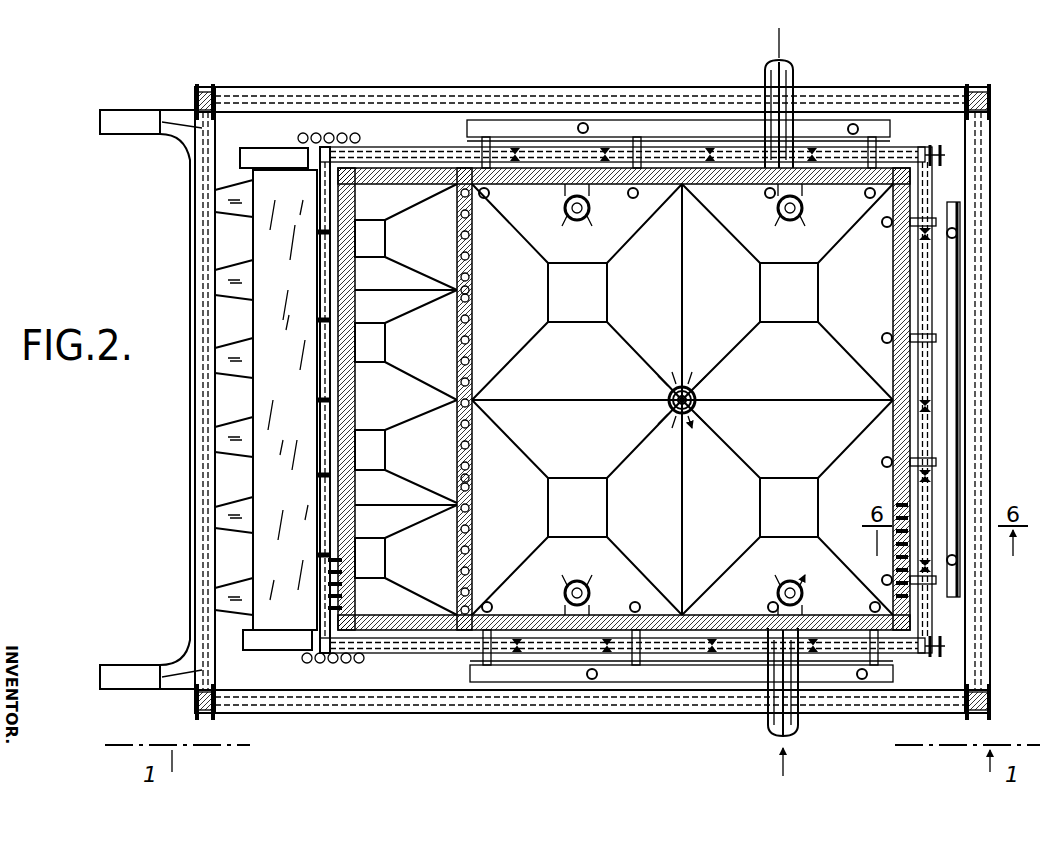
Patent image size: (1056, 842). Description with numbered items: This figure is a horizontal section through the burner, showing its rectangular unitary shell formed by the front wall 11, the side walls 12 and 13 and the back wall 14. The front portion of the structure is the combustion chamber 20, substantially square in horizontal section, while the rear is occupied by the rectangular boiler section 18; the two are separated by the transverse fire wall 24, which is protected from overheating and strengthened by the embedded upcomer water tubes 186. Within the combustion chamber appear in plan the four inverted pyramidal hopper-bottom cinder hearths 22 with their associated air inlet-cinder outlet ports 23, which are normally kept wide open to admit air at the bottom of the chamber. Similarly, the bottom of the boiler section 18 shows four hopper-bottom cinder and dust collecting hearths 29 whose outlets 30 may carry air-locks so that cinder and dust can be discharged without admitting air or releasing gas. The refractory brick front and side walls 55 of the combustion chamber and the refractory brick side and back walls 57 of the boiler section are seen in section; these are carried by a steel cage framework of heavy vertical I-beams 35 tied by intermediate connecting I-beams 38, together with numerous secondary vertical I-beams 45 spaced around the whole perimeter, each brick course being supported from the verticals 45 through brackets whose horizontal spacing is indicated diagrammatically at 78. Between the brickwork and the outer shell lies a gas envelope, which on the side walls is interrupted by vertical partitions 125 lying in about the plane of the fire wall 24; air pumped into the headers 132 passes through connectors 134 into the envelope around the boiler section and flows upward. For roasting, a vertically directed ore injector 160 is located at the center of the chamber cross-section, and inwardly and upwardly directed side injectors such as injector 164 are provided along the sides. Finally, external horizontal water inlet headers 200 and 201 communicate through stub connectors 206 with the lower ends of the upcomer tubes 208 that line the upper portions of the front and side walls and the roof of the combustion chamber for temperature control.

The front wall 11 is at (940, 185).
The side wall 12 is at (441, 140).
The side wall 13 is at (400, 658).
The back wall 14 is at (322, 357).
The boiler section 18 is at (432, 342).
The combustion chamber 20 is at (880, 275).
The hopper-bottom cinder hearth 22 is at (712, 204).
The air inlet-cinder outlet port 23 is at (683, 400).
The fire wall 24 is at (478, 385).
The hopper-bottom cinder and dust collecting hearth 29 is at (445, 247).
The outlet 30 is at (370, 399).
The vertical I-beam 35 is at (993, 102).
The intermediate connecting I-beam 38 is at (548, 88).
The secondary I-beam 45 is at (418, 150).
The refractory brick front and side walls 55 is at (735, 186).
The refractory brick side and back walls 57 is at (428, 186).
The bracket spacing 78 is at (327, 590).
The vertical partition 125 is at (462, 168).
The header 132 is at (118, 110).
The connector 134 is at (218, 287).
The ore injector 160 is at (696, 396).
The side injector 164 is at (806, 606).
The upcomer water tube 186 is at (469, 290).
The water inlet header 200 is at (830, 120).
The water inlet header 201 is at (960, 312).
The stub connector 206 is at (938, 463).
The upcomer tube 208 is at (631, 197).